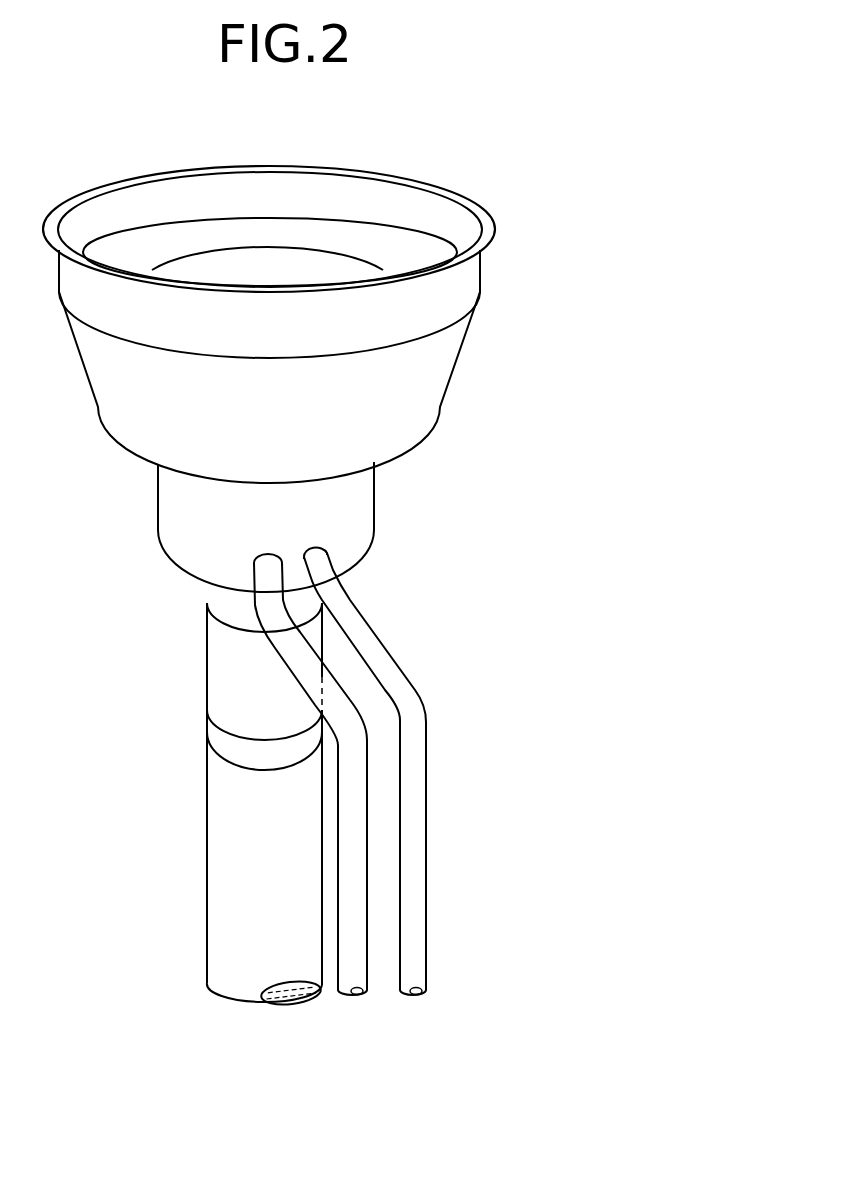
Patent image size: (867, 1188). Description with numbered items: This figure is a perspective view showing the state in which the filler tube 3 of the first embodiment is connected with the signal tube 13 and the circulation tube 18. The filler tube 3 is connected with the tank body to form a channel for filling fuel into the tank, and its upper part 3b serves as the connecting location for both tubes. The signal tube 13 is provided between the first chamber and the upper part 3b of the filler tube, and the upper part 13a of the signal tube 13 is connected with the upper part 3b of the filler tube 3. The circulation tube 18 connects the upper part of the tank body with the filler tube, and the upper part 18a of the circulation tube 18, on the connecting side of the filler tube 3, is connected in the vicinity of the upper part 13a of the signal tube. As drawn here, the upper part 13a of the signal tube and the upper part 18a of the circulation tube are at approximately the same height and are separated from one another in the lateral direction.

The filler tube 3 is at (170, 805).
The upper part of the filler tube 3b is at (358, 512).
The signal tube 13 is at (415, 740).
The upper part of the signal tube 13a is at (315, 560).
The circulation tube 18 is at (353, 868).
The upper part of the circulation tube 18a is at (258, 570).